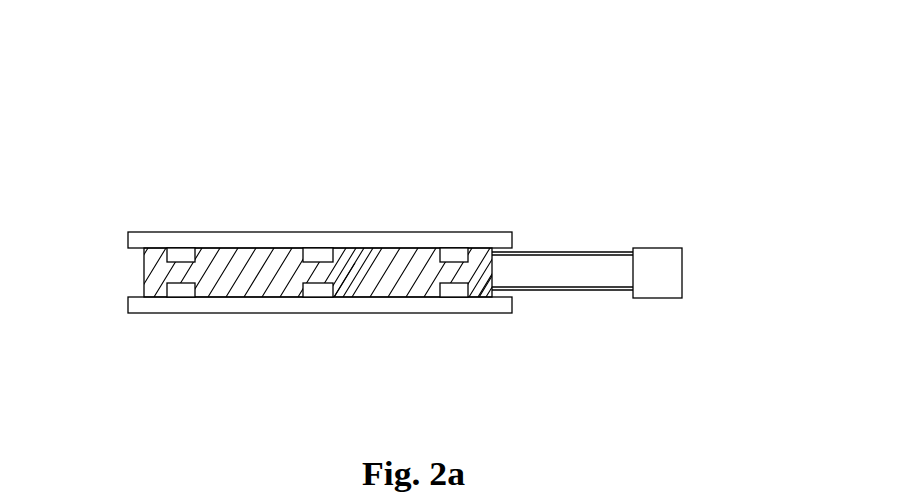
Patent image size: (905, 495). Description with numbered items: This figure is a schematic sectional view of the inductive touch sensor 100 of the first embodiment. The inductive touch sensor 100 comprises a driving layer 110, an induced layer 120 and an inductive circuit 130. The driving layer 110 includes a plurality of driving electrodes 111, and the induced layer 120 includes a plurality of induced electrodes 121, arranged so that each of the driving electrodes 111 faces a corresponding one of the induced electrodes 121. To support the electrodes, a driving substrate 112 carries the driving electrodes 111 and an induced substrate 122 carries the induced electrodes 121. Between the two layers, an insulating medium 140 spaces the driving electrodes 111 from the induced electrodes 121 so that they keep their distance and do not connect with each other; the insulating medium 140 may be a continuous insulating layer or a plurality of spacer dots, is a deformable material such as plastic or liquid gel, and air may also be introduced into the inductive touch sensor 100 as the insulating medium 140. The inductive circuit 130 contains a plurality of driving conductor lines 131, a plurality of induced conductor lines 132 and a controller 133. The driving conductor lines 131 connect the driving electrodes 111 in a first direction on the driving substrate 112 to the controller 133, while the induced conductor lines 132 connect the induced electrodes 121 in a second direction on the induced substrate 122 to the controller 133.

The inductive touch sensor 100 is at (218, 143).
The driving layer 110 is at (120, 240).
The driving electrodes 111 is at (183, 252).
The driving substrate 112 is at (377, 243).
The induced layer 120 is at (122, 305).
The induced electrodes 121 is at (183, 292).
The induced substrate 122 is at (378, 305).
The inductive circuit 130 is at (642, 274).
The driving conductor lines 131 is at (552, 253).
The induced conductor lines 132 is at (552, 289).
The controller 133 is at (665, 288).
The insulating medium 140 is at (258, 255).